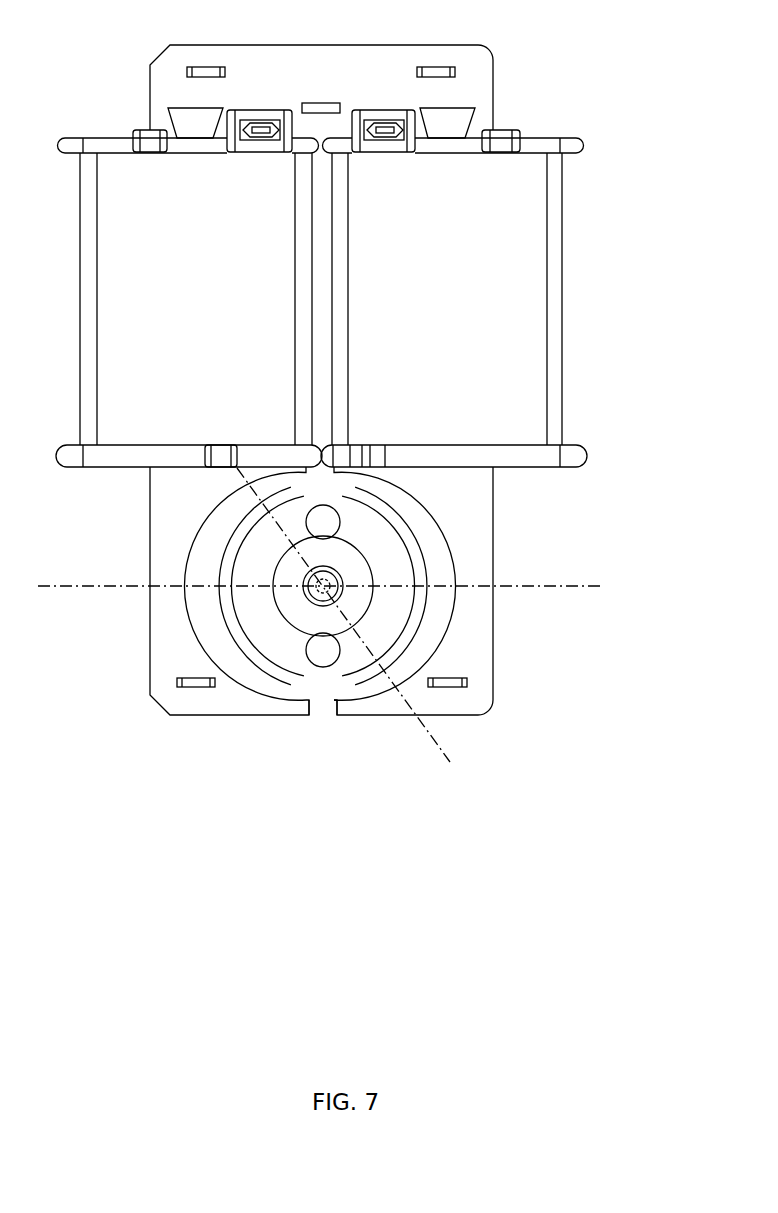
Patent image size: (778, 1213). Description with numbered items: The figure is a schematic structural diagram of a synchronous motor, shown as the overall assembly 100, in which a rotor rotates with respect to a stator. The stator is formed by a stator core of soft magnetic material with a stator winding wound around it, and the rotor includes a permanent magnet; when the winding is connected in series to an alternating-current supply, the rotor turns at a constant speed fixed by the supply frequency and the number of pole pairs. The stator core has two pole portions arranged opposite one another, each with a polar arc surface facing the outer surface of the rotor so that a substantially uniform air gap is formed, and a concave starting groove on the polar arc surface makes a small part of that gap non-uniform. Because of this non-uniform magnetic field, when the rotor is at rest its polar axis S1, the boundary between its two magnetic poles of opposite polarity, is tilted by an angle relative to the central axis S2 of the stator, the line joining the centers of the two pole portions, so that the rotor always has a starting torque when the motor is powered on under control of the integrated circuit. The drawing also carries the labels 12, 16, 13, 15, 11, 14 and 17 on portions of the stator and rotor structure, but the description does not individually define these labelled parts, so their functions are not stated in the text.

The electromagnetic relay assembly 100 is at (547, 72).
The upper mounting plate 12 is at (165, 93).
The coil body 16 is at (125, 258).
The outer boss 13 is at (213, 543).
The annular ring 15 is at (430, 542).
The central shaft circle 11 is at (265, 627).
The lower mounting plate 14 is at (463, 632).
The neck slot 17 is at (253, 687).
The polar axis S1 is at (356, 631).
The central axis S2 is at (333, 586).